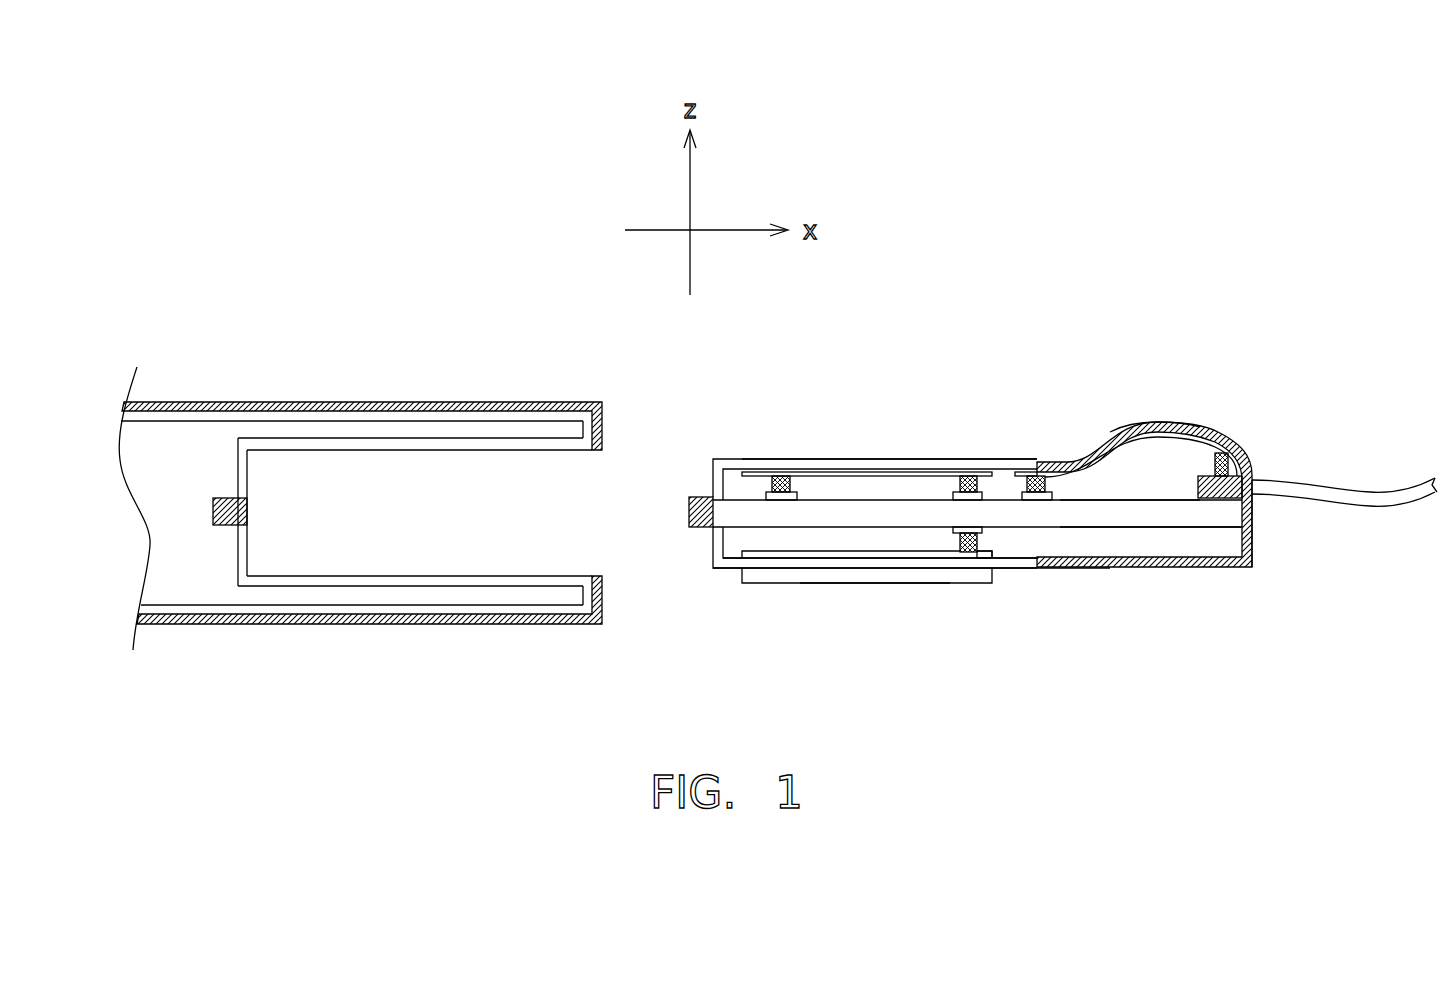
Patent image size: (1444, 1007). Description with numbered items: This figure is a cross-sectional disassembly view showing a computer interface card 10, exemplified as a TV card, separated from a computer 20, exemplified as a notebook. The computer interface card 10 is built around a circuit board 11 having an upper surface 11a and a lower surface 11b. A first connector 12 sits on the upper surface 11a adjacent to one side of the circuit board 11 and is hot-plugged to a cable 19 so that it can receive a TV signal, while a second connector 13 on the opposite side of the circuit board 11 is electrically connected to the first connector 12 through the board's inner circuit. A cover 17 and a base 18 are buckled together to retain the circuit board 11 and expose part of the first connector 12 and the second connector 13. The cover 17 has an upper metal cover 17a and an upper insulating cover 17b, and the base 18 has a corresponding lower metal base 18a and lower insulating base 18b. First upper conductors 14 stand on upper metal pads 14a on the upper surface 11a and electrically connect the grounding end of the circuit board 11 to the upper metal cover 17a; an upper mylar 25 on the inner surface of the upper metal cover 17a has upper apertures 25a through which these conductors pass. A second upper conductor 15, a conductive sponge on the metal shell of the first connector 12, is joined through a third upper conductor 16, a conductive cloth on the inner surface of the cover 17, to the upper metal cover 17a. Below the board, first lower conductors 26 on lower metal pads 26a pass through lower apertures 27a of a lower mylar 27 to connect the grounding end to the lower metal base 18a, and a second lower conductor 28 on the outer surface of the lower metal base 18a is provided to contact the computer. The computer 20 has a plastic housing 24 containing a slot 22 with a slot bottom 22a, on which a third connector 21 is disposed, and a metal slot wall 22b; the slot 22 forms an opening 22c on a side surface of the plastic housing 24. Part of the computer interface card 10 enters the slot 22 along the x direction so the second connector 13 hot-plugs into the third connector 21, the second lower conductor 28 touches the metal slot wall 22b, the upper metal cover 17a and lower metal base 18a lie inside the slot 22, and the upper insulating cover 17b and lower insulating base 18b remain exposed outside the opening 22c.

The computer interface card 10 is at (1225, 430).
The circuit board 11 is at (1130, 512).
The upper surface 11a is at (1102, 500).
The lower surface 11b is at (1203, 532).
The first connector 12 is at (1256, 505).
The second connector 13 is at (705, 528).
The first upper conductors 14 is at (965, 475).
The upper metal pads 14a is at (947, 490).
The second upper conductor 15 is at (1228, 450).
The third upper conductor 16 is at (1138, 431).
The cover 17 is at (725, 460).
The upper metal cover 17a is at (868, 466).
The upper insulating cover 17b is at (1182, 435).
The base 18 is at (722, 570).
The lower metal base 18a is at (872, 560).
The lower insulating base 18b is at (1097, 568).
The cable 19 is at (1422, 480).
The computer 20 is at (377, 400).
The third connector 21 is at (212, 508).
The slot 22 is at (430, 483).
The slot bottom 22a is at (242, 472).
The metal slot wall 22b is at (313, 586).
The opening 22c is at (614, 486).
The plastic housing 24 is at (343, 402).
The upper mylar 25 is at (908, 472).
The upper apertures 25a is at (793, 472).
The first lower conductors 26 is at (968, 552).
The lower metal pads 26a is at (984, 533).
The lower mylar 27 is at (905, 558).
The lower apertures 27a is at (950, 560).
The second lower conductor 28 is at (792, 568).